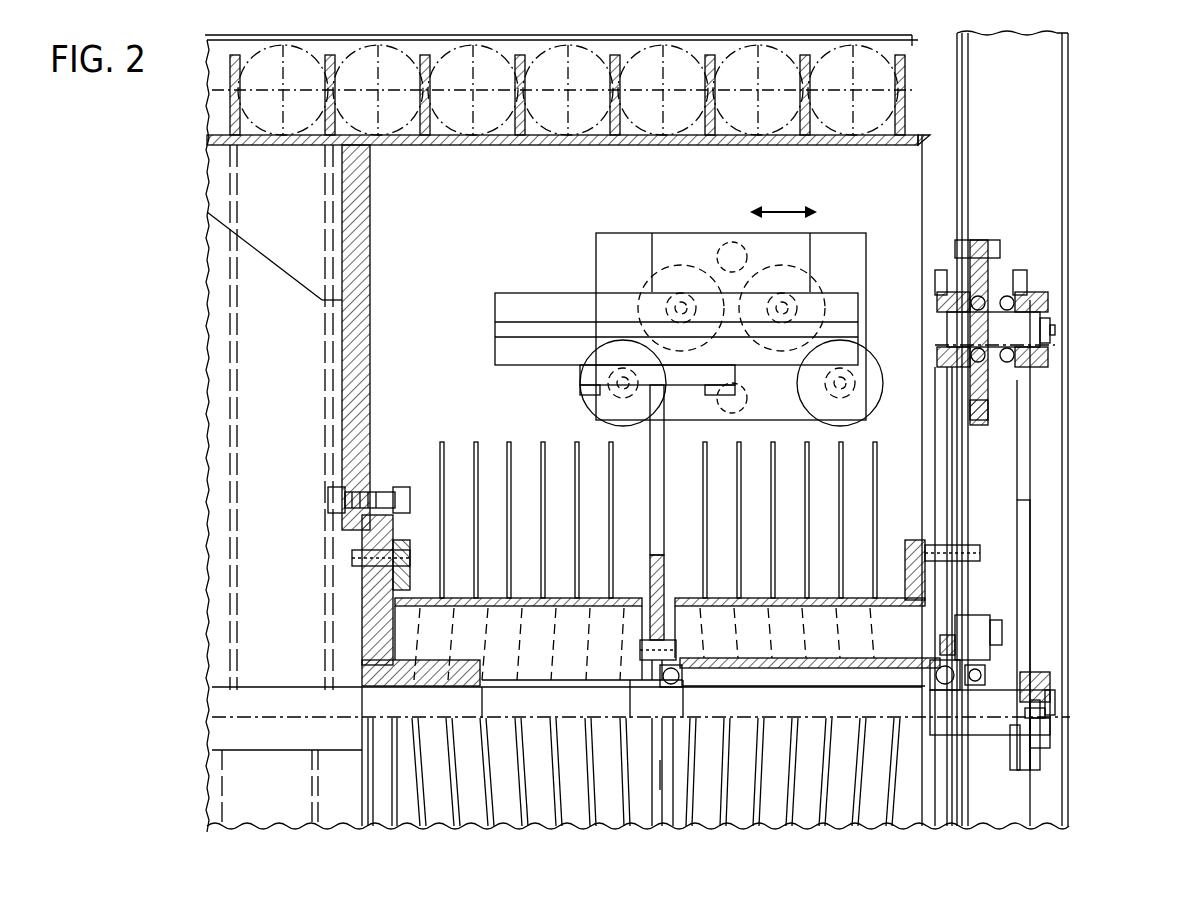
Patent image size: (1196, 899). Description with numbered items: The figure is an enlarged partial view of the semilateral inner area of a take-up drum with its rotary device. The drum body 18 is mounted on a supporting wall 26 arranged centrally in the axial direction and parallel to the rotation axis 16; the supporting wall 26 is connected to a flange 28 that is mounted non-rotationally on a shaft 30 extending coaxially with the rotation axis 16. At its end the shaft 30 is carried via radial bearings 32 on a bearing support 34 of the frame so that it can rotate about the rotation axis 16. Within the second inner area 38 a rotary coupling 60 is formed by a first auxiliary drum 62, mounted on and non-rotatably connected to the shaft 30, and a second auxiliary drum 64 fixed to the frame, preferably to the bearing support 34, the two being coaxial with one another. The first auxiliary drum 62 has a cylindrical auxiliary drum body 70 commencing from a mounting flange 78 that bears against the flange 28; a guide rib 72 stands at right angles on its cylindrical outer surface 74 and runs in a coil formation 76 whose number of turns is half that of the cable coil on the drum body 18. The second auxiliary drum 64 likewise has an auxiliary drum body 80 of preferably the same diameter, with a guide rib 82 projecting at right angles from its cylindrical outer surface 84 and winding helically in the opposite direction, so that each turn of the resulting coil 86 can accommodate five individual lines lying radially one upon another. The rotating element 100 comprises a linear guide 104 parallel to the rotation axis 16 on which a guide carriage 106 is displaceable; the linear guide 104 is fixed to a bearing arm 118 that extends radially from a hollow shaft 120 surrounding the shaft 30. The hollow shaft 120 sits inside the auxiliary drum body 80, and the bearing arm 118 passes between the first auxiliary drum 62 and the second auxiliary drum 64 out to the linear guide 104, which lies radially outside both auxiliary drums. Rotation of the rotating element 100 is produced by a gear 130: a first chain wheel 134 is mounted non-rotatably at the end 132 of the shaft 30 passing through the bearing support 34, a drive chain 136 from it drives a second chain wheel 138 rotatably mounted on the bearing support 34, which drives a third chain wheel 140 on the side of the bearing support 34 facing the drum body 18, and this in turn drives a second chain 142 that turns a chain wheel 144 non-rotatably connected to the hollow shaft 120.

The rotation axis 16 is at (1000, 745).
The drum body 18 is at (925, 130).
The supporting wall 26 is at (342, 338).
The flange 28 is at (362, 640).
The shaft 30 is at (235, 697).
The radial bearings 32 is at (990, 665).
The bearing support 34 is at (968, 175).
The second inner area 38 is at (818, 188).
The rotary coupling 60 is at (883, 190).
The first auxiliary drum 62 is at (448, 432).
The second auxiliary drum 64 is at (888, 440).
The auxiliary drum body 70 is at (572, 598).
The guide rib 72 is at (440, 450).
The cylindrical outer surface 74 is at (468, 598).
The coil formation 76 is at (504, 432).
The mounting flange 78 is at (365, 575).
The auxiliary drum body 80 is at (757, 598).
The guide rib 82 is at (980, 553).
The cylindrical outer surface 84 is at (860, 598).
The coil 86 is at (935, 455).
The rotating element 100 is at (723, 208).
The linear guide 104 is at (540, 305).
The guide carriage 106 is at (625, 245).
The bearing arm 118 is at (656, 500).
The hollow shaft 120 is at (780, 648).
The gear 130 is at (1012, 577).
The end of the shaft 132 is at (1035, 748).
The first chain wheel 134 is at (1040, 706).
The drive chain 136 is at (1020, 500).
The second chain wheel 138 is at (1048, 296).
The third chain wheel 140 is at (1000, 265).
The second chain 142 is at (945, 400).
The chain wheel 144 is at (1000, 630).